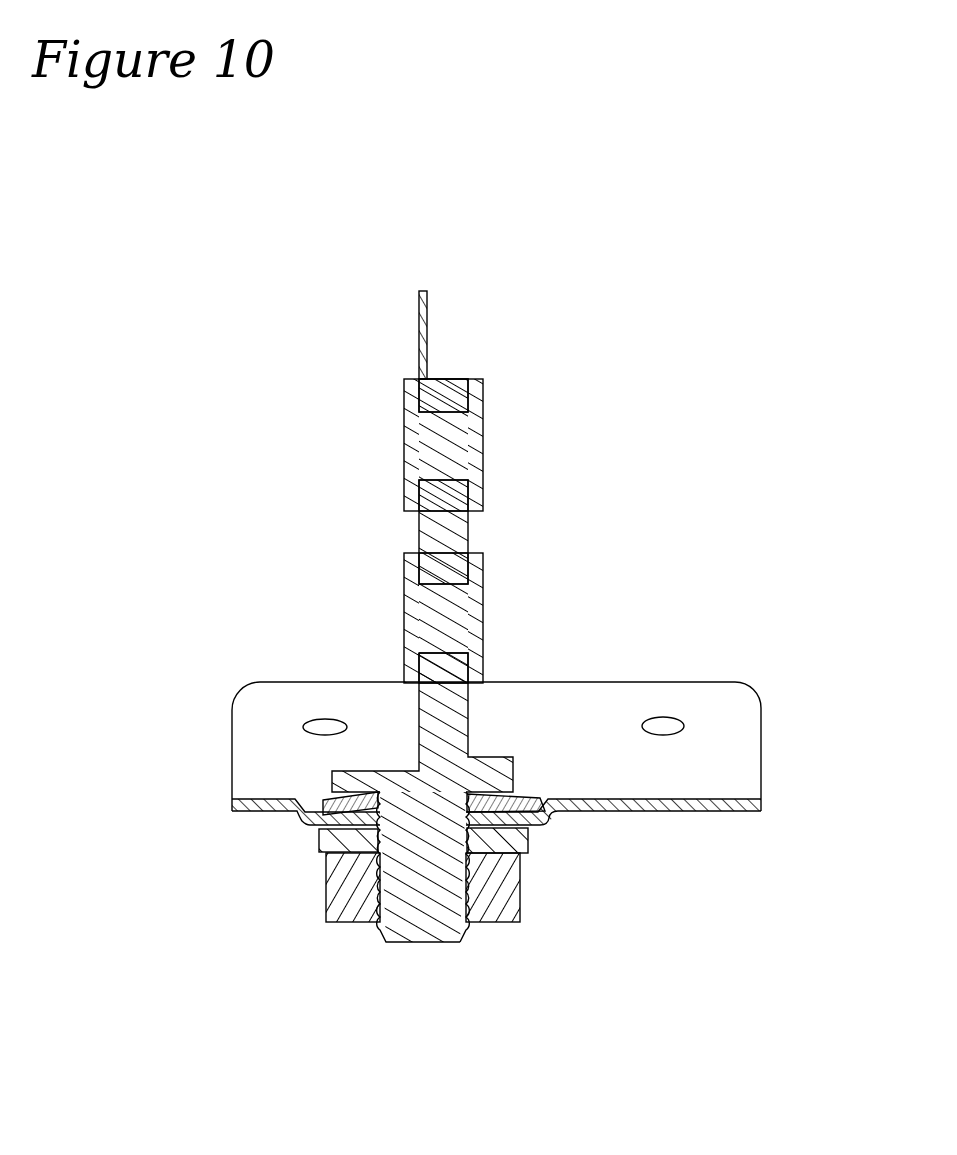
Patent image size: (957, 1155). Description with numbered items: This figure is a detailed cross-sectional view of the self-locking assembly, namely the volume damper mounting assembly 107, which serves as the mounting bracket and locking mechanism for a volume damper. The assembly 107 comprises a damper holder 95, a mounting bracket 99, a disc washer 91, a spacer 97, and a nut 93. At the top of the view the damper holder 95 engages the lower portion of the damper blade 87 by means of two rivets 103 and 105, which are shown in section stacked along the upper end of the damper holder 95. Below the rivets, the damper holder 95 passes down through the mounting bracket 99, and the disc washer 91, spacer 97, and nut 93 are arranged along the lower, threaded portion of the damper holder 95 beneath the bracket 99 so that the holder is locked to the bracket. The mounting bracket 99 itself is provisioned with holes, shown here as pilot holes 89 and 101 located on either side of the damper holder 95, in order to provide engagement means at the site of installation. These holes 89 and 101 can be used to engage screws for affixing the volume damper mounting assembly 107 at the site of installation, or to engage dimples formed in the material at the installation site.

The damper blade 87 is at (419, 293).
The volume damper mounting assembly 107 is at (458, 341).
The rivet 105 is at (489, 446).
The rivet 103 is at (489, 611).
The pilot hole 89 is at (320, 730).
The pilot hole 101 is at (665, 720).
The mounting bracket 99 is at (715, 790).
The disc washer 91 is at (332, 797).
The spacer 97 is at (531, 838).
The nut 93 is at (321, 895).
The damper holder 95 is at (385, 935).